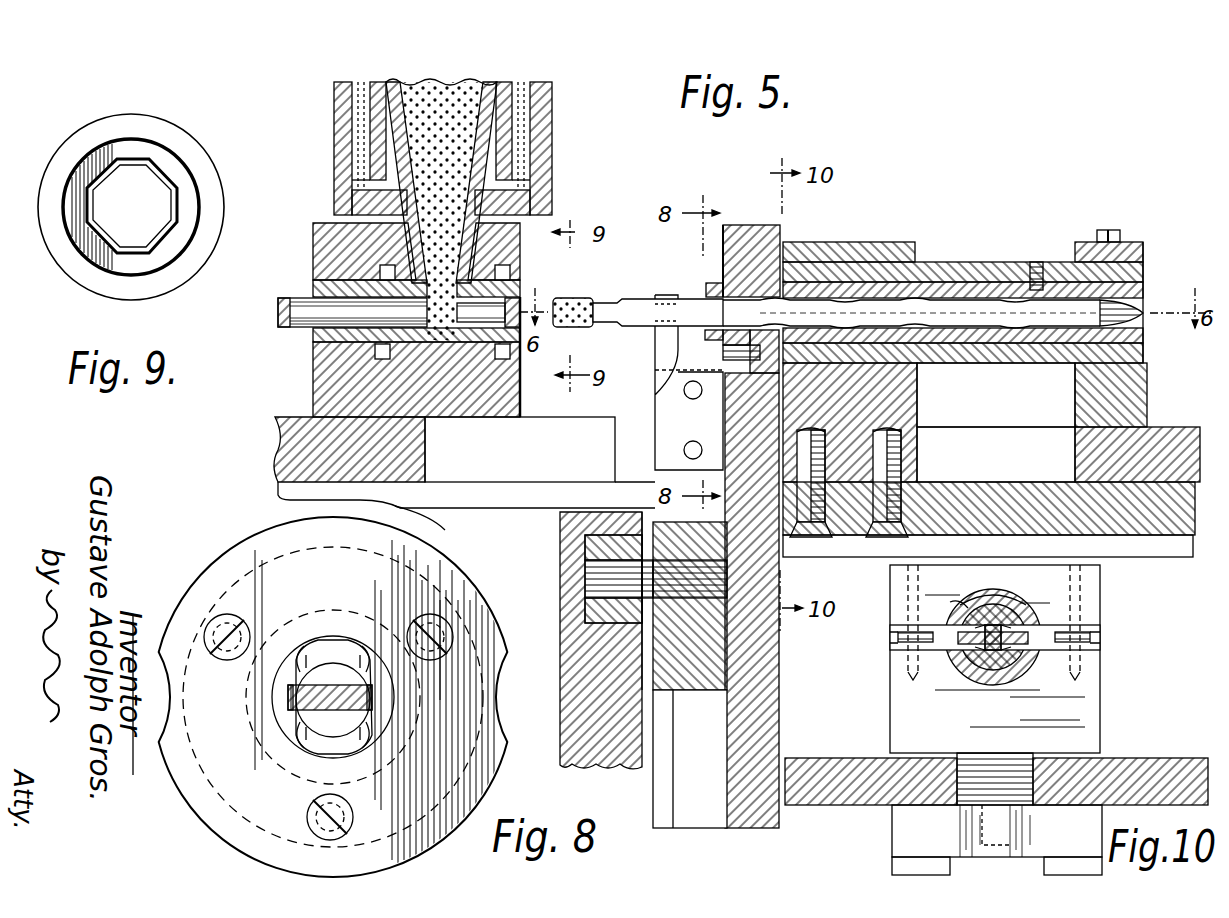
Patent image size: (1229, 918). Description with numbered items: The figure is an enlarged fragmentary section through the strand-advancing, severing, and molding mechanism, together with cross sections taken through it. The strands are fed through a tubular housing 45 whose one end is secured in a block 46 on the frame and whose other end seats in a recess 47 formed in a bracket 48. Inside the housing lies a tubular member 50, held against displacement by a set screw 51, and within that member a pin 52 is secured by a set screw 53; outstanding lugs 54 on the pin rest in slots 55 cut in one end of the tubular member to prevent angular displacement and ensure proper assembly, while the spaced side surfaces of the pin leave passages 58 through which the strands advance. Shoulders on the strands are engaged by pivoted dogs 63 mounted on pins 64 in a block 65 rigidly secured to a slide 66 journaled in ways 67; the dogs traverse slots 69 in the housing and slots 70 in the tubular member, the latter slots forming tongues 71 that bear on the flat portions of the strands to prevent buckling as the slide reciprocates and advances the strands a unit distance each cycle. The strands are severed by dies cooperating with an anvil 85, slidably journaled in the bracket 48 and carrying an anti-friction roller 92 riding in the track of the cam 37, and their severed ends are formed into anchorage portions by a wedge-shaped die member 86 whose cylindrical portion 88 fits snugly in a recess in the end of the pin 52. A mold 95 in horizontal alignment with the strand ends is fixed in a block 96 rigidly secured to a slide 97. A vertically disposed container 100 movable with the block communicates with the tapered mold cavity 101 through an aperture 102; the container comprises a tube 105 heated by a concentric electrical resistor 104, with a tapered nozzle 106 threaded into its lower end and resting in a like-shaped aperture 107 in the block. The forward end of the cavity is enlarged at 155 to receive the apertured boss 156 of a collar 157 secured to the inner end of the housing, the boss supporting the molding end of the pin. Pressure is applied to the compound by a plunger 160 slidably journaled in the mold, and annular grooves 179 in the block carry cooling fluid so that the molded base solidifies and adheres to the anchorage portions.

In FIG. 5, the cam 37 is at (572, 663).
In FIG. 5, the tubular housing 45 is at (960, 265).
In FIG. 10, the tubular housing 45 is at (995, 592).
In FIG. 5, the block 46 is at (1120, 407).
In FIG. 5, the recess 47 is at (790, 252).
In FIG. 5, the bracket 48 is at (740, 228).
In FIG. 5, the tubular member 50 is at (1000, 283).
In FIG. 10, the tubular member 50 is at (980, 655).
In FIG. 5, the set screw 51 is at (1043, 268).
In FIG. 5, the pin 52 is at (1145, 300).
In FIG. 10, the pin 52 is at (990, 665).
In FIG. 5, the set screw 53 is at (1100, 256).
In FIG. 5, the lugs 54 is at (784, 285).
In FIG. 5, the slots 55 is at (778, 345).
In FIG. 8, the passages 58 is at (333, 655).
In FIG. 10, the dogs 63 is at (1015, 625).
In FIG. 10, the pins 64 is at (908, 595).
In FIG. 5, the block 65 is at (917, 405).
In FIG. 10, the block 65 is at (1092, 668).
In FIG. 5, the slide 66 is at (966, 482).
In FIG. 10, the slide 66 is at (898, 637).
In FIG. 10, the ways 67 is at (905, 828).
In FIG. 10, the slots 69 is at (958, 606).
In FIG. 10, the slots 70 is at (985, 600).
In FIG. 10, the tongues 71 is at (960, 640).
In FIG. 5, the anvil 85 is at (690, 300).
In FIG. 8, the wedge-shaped die member 86 is at (288, 697).
In FIG. 8, the cylindrical portion 88 is at (335, 718).
In FIG. 5, the anti-friction roller 92 is at (597, 607).
In FIG. 5, the mold 95 is at (320, 335).
In FIG. 9, the mold 95 is at (195, 210).
In FIG. 5, the block 96 is at (330, 269).
In FIG. 5, the slide 97 is at (290, 450).
In FIG. 5, the container 100 is at (553, 127).
In FIG. 5, the mold cavity 101 is at (522, 300).
In FIG. 9, the mold cavity 101 is at (145, 232).
In FIG. 5, the aperture 102 is at (510, 298).
In FIG. 5, the electrical resistor 104 is at (365, 142).
In FIG. 5, the tube 105 is at (400, 92).
In FIG. 5, the tapered nozzle 106 is at (400, 237).
In FIG. 5, the aperture 107 is at (398, 256).
In FIG. 5, the enlarged forward end 155 is at (522, 372).
In FIG. 9, the enlarged forward end 155 is at (173, 252).
In FIG. 5, the apertured boss 156 is at (722, 338).
In FIG. 8, the apertured boss 156 is at (275, 728).
In FIG. 5, the collar 157 is at (718, 240).
In FIG. 5, the plunger 160 is at (286, 306).
In FIG. 5, the annular grooves 179 is at (378, 352).